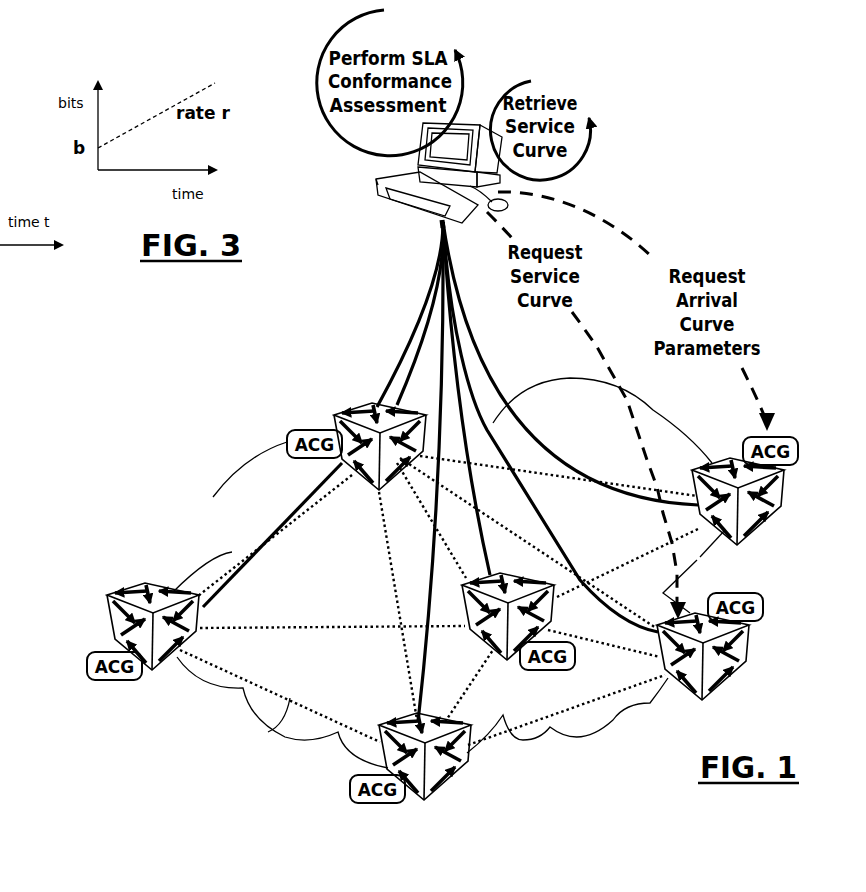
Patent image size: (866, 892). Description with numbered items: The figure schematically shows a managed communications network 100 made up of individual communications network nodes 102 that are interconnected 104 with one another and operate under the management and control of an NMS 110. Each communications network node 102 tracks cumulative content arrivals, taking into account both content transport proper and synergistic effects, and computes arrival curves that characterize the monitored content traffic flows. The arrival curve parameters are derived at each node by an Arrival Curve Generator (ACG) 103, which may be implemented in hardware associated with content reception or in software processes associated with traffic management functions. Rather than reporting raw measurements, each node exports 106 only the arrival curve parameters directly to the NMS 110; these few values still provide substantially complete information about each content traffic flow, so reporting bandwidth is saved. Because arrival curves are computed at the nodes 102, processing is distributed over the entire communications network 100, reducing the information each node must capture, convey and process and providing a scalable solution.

The communications network 100 is at (237, 492).
The communications network node 102 is at (360, 410).
The Arrival Curve Generator (ACG) 103 is at (287, 442).
The interconnection 104 is at (260, 738).
The export 106 is at (413, 327).
The NMS 110 is at (393, 173).